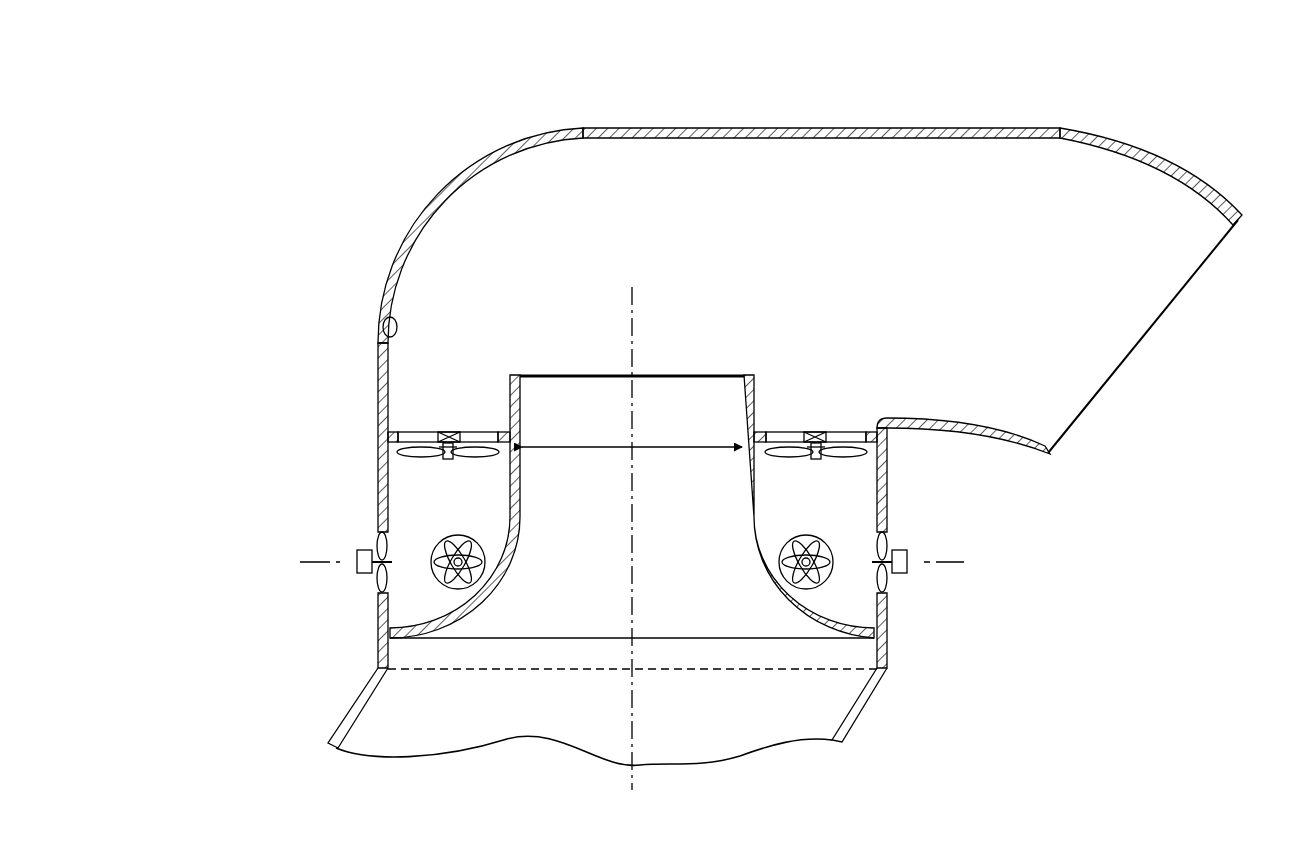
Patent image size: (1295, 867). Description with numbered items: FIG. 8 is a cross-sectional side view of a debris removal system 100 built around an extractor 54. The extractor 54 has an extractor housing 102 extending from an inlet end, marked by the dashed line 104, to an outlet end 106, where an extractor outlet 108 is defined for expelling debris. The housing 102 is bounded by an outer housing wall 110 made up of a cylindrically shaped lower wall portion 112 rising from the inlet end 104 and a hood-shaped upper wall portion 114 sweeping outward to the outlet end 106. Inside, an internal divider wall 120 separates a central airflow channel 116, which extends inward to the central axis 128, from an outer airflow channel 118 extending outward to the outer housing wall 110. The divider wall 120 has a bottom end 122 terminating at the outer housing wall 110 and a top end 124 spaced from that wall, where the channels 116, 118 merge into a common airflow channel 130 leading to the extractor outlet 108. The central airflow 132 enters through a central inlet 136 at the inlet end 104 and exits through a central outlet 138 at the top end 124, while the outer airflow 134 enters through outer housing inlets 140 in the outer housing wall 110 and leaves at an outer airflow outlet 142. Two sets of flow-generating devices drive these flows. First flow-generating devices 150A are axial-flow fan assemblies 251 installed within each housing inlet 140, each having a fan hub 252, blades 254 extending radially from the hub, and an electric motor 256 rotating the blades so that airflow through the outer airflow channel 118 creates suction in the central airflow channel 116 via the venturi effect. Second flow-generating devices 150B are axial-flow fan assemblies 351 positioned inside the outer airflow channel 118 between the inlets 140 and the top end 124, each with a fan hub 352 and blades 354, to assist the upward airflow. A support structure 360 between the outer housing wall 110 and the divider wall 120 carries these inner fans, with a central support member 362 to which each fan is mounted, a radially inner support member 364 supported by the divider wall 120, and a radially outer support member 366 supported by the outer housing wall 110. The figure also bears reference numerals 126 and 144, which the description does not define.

The debris removal system 100 is at (352, 165).
The extractor 54 is at (470, 142).
The hood-shaped upper wall portion 114 is at (815, 127).
The extractor housing 102 is at (404, 243).
The outer housing wall 110 is at (827, 267).
The joint 126 is at (380, 322).
The lower wall portion 112 is at (378, 363).
The outlet end 106 is at (1185, 291).
The extractor outlet 108 is at (1141, 355).
The common airflow channel 130 is at (874, 247).
The central axis 128 is at (637, 310).
The outer airflow outlet 142 is at (475, 352).
The top end of divider wall 124 is at (512, 374).
The central outlet 138 is at (675, 372).
The internal divider wall 120 is at (758, 382).
The duct width 144 is at (570, 450).
The outer airflow channel 118 is at (490, 505).
The central airflow channel 116 is at (703, 510).
The support structure 360 is at (410, 420).
The central support member 362 is at (445, 431).
The radially outer support member 366 is at (385, 431).
The radially inner support member 364 is at (500, 435).
The fan hub 352 is at (448, 443).
The second flow-generating devices 150B is at (627, 439).
The axial-flow fan assembly 351 is at (398, 453).
The blades 354 is at (416, 458).
The first flow-generating devices 150A is at (636, 551).
The axial-flow fan assembly 251 is at (342, 550).
The fan hub 252 is at (386, 572).
The blades 254 is at (381, 542).
The electric motor 256 is at (357, 568).
The outer airflow 134 is at (413, 556).
The central airflow 132 is at (577, 594).
The central inlet 136 is at (555, 678).
The outer housing inlet 140 is at (377, 592).
The bottom end of divider wall 122 is at (376, 668).
The inlet end 104 is at (748, 670).